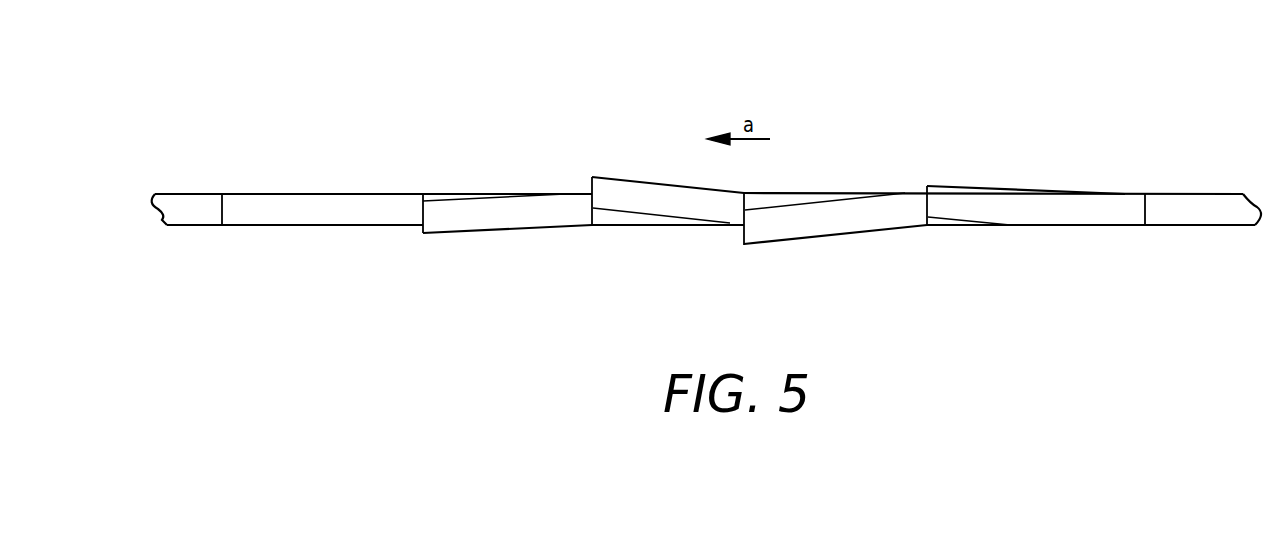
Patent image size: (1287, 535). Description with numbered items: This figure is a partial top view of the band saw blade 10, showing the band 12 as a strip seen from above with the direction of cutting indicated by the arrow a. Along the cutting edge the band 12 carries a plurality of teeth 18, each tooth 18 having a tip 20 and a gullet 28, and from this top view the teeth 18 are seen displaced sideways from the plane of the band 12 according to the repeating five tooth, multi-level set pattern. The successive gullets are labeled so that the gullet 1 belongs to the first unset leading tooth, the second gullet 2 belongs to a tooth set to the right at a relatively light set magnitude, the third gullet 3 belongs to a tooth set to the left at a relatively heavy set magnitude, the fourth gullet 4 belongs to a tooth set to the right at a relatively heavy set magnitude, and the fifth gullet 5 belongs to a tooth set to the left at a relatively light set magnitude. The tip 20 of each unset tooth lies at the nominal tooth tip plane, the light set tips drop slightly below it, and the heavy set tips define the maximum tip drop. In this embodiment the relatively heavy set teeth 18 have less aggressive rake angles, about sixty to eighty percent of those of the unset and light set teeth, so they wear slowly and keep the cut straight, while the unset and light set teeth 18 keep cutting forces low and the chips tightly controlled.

The saw blade 10 is at (953, 67).
The band 12 is at (266, 227).
The tooth 18 is at (283, 201).
The tip 20 is at (222, 193).
The gullet 28 is at (378, 201).
The gullet 1 is at (1104, 220).
The second gullet 2 is at (352, 221).
The third gullet 3 is at (557, 222).
The fourth gullet 4 is at (727, 217).
The fifth gullet 5 is at (894, 218).